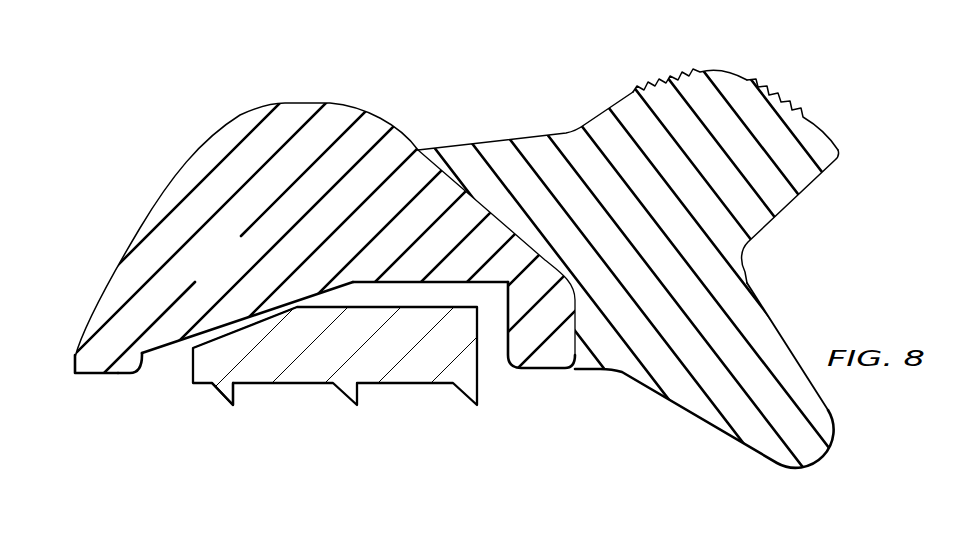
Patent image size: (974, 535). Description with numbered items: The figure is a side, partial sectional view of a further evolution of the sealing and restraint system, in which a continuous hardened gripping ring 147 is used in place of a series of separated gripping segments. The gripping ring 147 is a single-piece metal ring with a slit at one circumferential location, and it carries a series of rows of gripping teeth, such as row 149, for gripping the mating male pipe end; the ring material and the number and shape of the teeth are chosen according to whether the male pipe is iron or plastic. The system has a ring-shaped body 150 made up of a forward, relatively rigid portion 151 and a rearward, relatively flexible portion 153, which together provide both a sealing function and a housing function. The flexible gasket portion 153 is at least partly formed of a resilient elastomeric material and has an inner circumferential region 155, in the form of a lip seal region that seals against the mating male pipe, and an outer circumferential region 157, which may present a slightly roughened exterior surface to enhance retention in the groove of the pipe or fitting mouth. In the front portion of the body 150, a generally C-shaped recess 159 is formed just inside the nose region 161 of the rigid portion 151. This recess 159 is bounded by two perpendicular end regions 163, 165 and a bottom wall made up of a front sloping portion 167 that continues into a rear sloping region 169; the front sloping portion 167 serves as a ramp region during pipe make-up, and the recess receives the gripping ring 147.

The gripping ring 147 is at (353, 381).
The row of gripping teeth 149 is at (226, 405).
The ring-shaped body 150 is at (670, 249).
The forward relatively rigid portion 151 is at (399, 252).
The rearward relatively flexible portion 153 is at (815, 99).
The inner circumferential region 155 is at (713, 427).
The outer circumferential region 157 is at (705, 72).
The C-shaped recess 159 is at (170, 350).
The nose region 161 is at (75, 348).
The perpendicular end region 163 is at (150, 362).
The perpendicular end region 165 is at (497, 348).
The front sloping portion 167 is at (232, 327).
The rear sloping region 169 is at (435, 282).